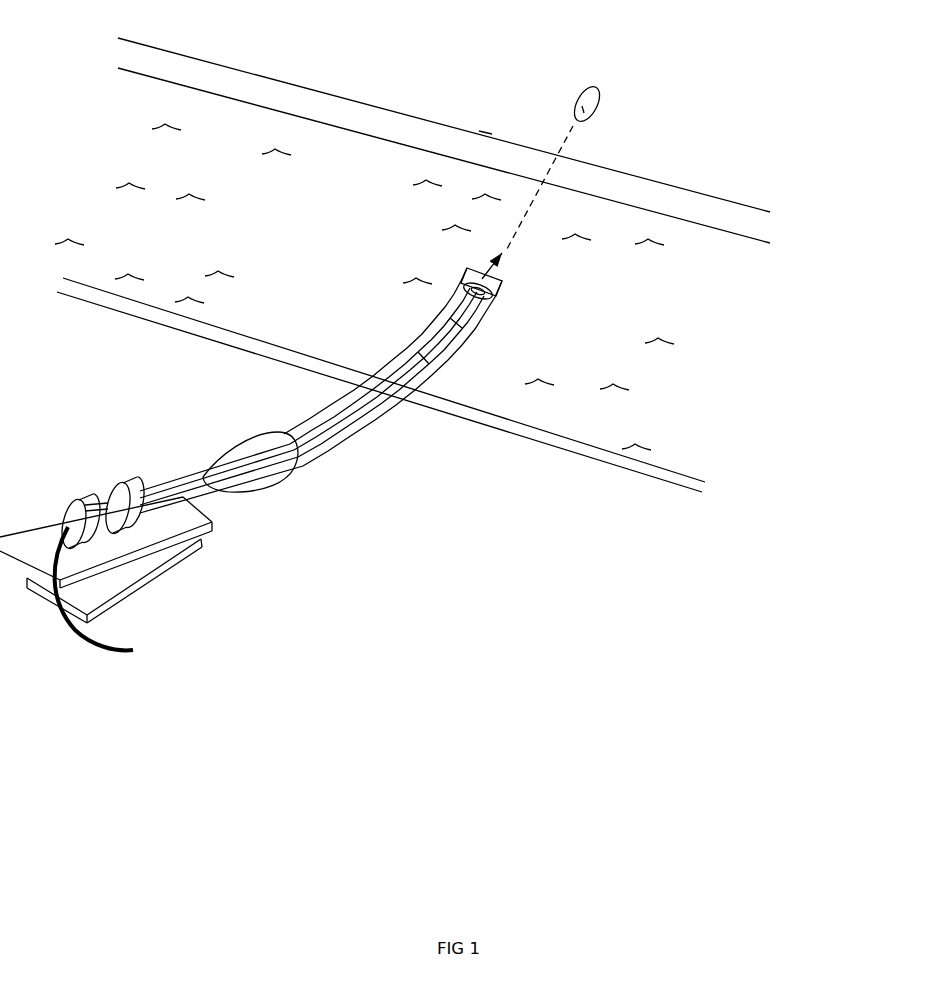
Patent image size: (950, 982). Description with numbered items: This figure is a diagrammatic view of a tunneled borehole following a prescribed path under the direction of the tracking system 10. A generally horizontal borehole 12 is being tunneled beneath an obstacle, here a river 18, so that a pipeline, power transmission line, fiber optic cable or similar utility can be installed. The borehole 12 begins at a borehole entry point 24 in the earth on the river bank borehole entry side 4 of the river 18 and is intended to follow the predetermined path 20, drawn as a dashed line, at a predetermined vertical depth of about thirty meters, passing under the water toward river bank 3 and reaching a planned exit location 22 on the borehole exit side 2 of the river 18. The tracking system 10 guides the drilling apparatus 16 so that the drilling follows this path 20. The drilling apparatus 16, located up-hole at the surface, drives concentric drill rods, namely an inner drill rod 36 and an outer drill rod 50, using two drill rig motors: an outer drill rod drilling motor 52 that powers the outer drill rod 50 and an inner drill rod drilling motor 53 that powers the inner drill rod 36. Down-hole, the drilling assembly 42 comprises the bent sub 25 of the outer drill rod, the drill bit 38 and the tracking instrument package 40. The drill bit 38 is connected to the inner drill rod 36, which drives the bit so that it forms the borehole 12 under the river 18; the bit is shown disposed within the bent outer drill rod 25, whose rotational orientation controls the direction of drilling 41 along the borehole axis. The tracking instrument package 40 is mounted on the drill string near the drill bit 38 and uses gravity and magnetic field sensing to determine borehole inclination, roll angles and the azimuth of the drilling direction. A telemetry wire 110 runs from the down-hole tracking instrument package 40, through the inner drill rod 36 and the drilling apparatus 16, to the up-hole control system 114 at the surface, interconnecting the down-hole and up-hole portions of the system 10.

The borehole exit side of river 2 is at (385, 28).
The river bank 3 is at (424, 104).
The river bank borehole entry side 4 is at (572, 458).
The tracking system 10 is at (428, 777).
The borehole 12 is at (288, 432).
The drilling apparatus 16 is at (249, 516).
The river 18 is at (364, 287).
The prescribed path 20 is at (581, 151).
The planned exit location 22 is at (604, 96).
The borehole entry point into the earth 24 is at (293, 470).
The bent sub 25 is at (479, 336).
The inner drill rod 36 is at (199, 494).
The drill bit 38 is at (465, 274).
The tracking instrument package 40 is at (431, 351).
The direction of drilling 41 is at (513, 277).
The drilling assembly 42 is at (421, 381).
The outer drill rod 50 is at (234, 490).
The outer drill rod motor 52 is at (141, 518).
The inner drill rod motor 53 is at (81, 548).
The telemetry wire 110 is at (85, 646).
The up-hole control system 114 is at (208, 663).